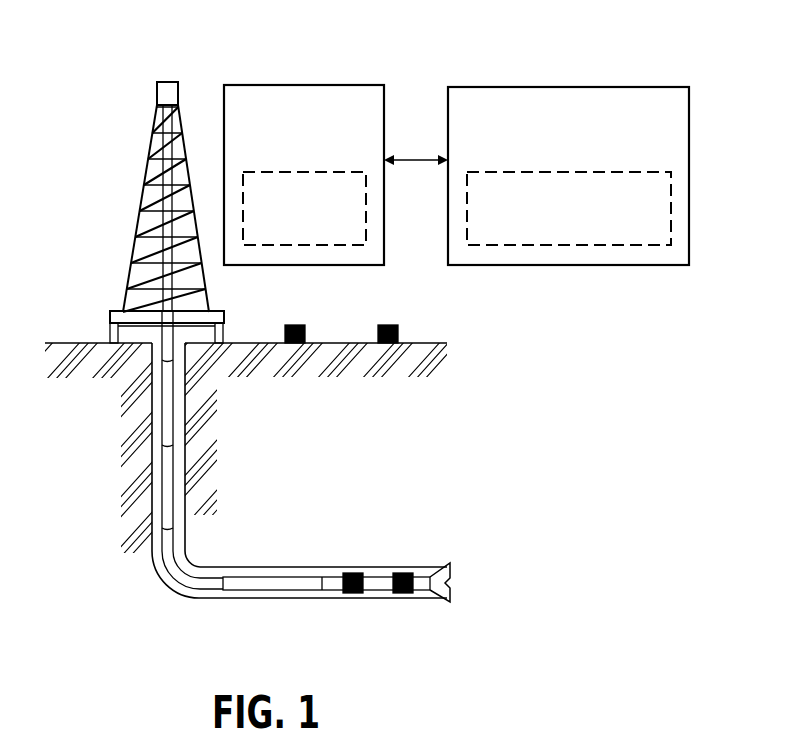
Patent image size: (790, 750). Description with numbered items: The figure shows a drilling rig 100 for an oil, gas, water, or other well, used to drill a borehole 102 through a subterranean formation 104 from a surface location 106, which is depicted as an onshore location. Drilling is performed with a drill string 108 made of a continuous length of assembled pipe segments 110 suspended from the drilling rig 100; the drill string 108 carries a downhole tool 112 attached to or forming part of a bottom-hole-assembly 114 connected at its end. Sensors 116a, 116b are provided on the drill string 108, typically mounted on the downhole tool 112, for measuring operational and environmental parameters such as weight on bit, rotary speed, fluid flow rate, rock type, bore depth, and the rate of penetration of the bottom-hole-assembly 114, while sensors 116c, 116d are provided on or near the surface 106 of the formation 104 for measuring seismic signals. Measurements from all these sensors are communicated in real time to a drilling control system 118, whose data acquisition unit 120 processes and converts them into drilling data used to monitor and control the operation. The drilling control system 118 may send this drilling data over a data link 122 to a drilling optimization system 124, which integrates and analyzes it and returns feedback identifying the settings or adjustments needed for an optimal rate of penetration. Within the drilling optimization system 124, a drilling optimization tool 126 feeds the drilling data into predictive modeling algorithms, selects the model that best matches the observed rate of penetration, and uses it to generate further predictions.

The drilling rig 100 is at (53, 66).
The borehole 102 is at (152, 455).
The subterranean formation 104 is at (388, 448).
The surface location 106 is at (110, 343).
The drill string 108 is at (157, 550).
The pipe segments 110 is at (173, 400).
The downhole tool 112 is at (378, 577).
The bottom-hole-assembly 114 is at (450, 580).
The sensor 116a is at (353, 573).
The sensor 116b is at (403, 593).
The sensor 116c is at (297, 324).
The sensor 116d is at (388, 324).
The drilling control system 118 is at (305, 85).
The data acquisition unit 120 is at (368, 212).
The data link 122 is at (412, 158).
The drilling optimization system 124 is at (588, 87).
The drilling optimization tool 126 is at (671, 213).